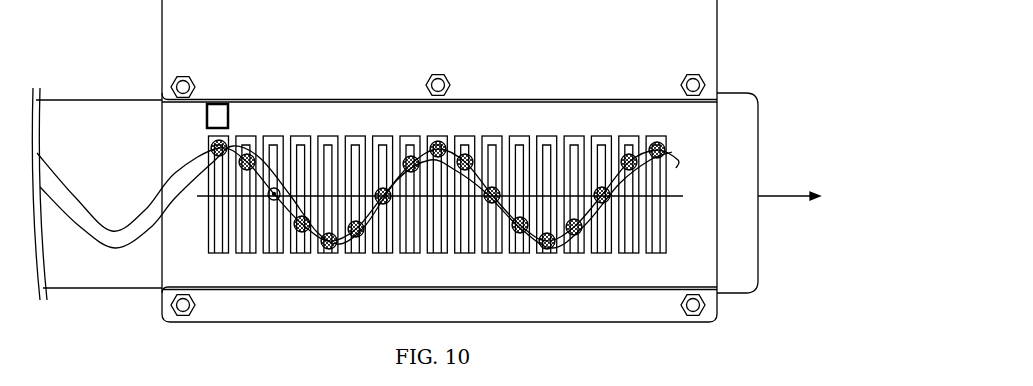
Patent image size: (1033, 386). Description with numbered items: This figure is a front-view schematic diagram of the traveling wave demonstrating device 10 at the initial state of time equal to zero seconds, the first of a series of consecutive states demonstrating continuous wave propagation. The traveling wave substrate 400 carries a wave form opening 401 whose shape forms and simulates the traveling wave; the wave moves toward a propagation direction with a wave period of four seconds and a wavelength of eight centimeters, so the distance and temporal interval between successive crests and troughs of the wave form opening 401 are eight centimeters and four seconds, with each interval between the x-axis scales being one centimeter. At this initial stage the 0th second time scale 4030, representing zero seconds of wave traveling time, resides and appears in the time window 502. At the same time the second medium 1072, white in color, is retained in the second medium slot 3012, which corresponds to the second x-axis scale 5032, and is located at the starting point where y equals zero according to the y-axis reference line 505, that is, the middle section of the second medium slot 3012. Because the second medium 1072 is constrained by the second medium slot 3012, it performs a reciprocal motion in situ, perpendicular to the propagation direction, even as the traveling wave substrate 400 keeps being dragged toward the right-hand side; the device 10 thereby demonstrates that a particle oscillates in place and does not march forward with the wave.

The traveling wave demonstrating device 10 is at (125, 31).
The traveling wave substrate 400 is at (97, 194).
The wave form opening 401 is at (148, 220).
The second medium 1072 is at (285, 182).
The second medium slot 3012 is at (273, 187).
The y-axis reference line 505 is at (673, 196).
The time window 502 is at (218, 99).
The 0th second time scale 4030 is at (222, 99).
The second x-axis scale 5032 is at (263, 266).